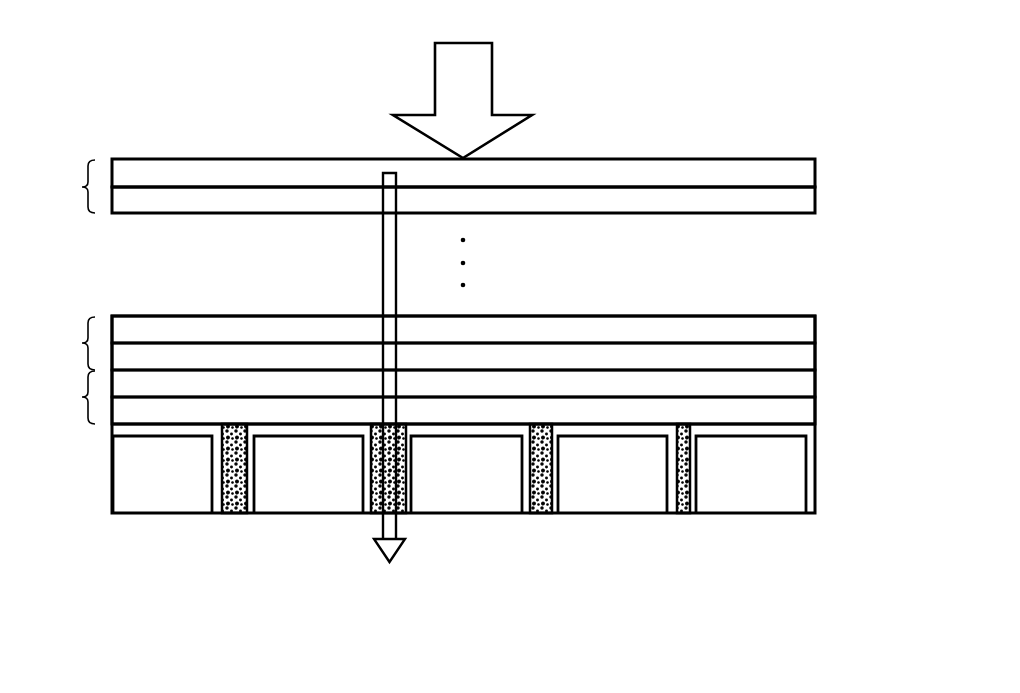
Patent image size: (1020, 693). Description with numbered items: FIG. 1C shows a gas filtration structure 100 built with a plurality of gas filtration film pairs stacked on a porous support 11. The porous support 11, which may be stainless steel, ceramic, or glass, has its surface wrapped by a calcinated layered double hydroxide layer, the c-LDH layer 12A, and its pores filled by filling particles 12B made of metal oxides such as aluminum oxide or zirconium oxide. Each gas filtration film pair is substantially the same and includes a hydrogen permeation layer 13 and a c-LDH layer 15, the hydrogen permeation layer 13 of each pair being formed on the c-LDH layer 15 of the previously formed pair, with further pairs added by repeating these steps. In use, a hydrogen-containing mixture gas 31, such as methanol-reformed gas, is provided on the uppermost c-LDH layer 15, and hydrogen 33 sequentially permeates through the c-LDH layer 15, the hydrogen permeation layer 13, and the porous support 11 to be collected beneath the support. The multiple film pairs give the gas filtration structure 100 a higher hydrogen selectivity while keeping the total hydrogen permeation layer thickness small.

The gas filtration structure 100 is at (113, 108).
The porous support 11 is at (790, 473).
The c-LDH layer 12A is at (805, 425).
The filling particles 12B is at (545, 500).
The hydrogen permeation layer 13 is at (805, 198).
The c-LDH layer 15 is at (805, 173).
The hydrogen-containing mixture gas 31 is at (492, 78).
The hydrogen 33 is at (383, 530).